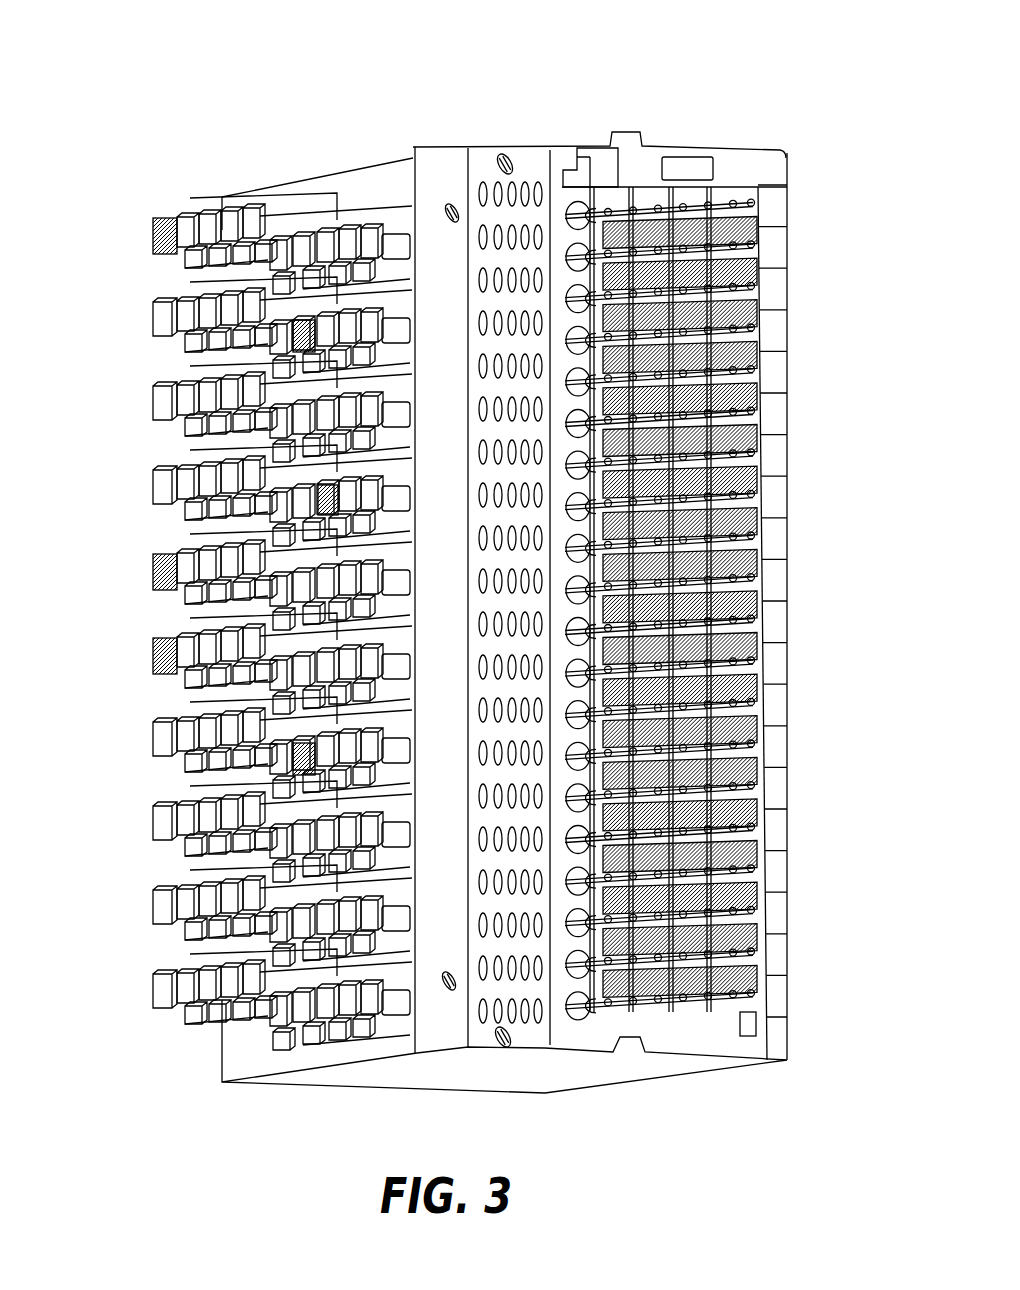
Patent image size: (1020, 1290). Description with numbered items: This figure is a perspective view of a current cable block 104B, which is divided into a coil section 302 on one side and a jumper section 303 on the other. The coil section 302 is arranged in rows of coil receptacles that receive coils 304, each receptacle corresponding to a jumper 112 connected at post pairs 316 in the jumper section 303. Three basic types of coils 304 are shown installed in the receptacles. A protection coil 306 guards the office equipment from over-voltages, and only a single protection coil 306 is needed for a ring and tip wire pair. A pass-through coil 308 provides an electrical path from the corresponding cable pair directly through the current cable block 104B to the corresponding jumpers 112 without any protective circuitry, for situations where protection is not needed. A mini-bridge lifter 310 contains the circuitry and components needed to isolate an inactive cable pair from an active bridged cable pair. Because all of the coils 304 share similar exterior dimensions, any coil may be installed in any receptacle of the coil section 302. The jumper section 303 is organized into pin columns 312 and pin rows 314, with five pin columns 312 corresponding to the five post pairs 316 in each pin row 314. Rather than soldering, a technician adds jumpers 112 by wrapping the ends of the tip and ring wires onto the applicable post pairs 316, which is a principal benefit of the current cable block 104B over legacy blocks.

The current cable block 104B is at (187, 62).
The coil section 302 is at (291, 152).
The jumper section 303 is at (684, 124).
The jumpers 112 is at (755, 222).
The coils 304 is at (140, 374).
The protection coil 306 is at (162, 487).
The pass-through coil 308 is at (163, 577).
The mini-bridge lifter 310 is at (152, 230).
The pin columns 312 is at (656, 663).
The pin rows 314 is at (828, 622).
The post pairs 316 is at (602, 1000).